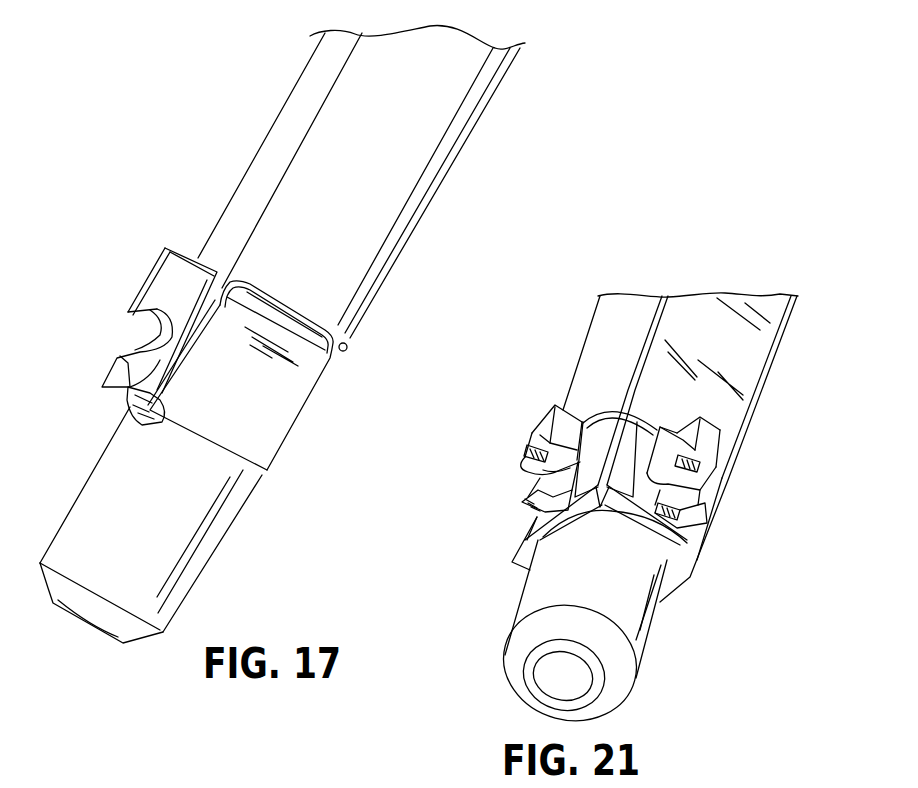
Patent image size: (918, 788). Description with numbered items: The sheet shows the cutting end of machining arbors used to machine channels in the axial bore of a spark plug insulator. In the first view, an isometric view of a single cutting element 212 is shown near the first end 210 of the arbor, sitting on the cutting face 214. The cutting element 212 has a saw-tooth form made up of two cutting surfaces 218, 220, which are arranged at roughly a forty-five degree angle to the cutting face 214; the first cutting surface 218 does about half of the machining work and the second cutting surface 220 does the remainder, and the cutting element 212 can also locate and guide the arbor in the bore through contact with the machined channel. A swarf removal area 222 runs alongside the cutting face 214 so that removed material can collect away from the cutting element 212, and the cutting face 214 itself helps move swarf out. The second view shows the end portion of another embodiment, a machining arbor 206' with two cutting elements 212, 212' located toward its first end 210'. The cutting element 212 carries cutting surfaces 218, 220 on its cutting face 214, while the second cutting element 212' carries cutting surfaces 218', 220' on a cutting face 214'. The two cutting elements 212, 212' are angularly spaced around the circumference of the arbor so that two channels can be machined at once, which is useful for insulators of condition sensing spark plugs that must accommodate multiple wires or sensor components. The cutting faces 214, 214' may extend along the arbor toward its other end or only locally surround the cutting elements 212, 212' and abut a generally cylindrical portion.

In FIG. 21, the machining arbor 206' is at (647, 252).
In FIG. 17, the first end 210 is at (172, 525).
In FIG. 21, the first end 210' is at (597, 637).
In FIG. 17, the cutting element 212 is at (172, 288).
In FIG. 21, the cutting element 212 is at (736, 439).
In FIG. 21, the cutting element 212' is at (536, 406).
In FIG. 17, the cutting face 214 is at (356, 188).
In FIG. 21, the cutting face 214 is at (654, 449).
In FIG. 21, the cutting face 214' is at (482, 543).
In FIG. 17, the first cutting surface 218 is at (101, 415).
In FIG. 21, the first cutting surface 218 is at (716, 524).
In FIG. 21, the first cutting surface 218' is at (511, 495).
In FIG. 17, the second cutting surface 220 is at (119, 348).
In FIG. 21, the second cutting surface 220 is at (726, 476).
In FIG. 21, the second cutting surface 220' is at (519, 456).
In FIG. 17, the swarf removal area 222 is at (280, 413).